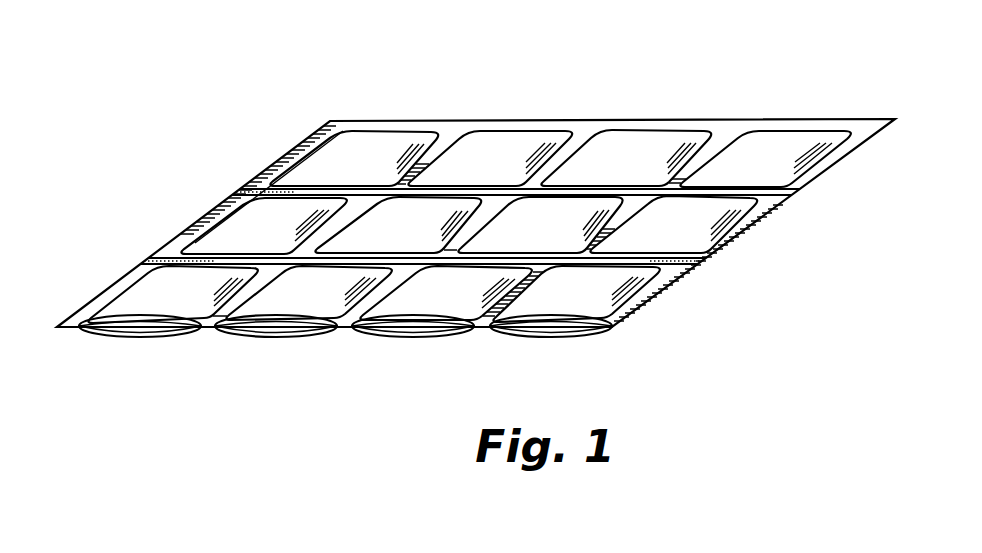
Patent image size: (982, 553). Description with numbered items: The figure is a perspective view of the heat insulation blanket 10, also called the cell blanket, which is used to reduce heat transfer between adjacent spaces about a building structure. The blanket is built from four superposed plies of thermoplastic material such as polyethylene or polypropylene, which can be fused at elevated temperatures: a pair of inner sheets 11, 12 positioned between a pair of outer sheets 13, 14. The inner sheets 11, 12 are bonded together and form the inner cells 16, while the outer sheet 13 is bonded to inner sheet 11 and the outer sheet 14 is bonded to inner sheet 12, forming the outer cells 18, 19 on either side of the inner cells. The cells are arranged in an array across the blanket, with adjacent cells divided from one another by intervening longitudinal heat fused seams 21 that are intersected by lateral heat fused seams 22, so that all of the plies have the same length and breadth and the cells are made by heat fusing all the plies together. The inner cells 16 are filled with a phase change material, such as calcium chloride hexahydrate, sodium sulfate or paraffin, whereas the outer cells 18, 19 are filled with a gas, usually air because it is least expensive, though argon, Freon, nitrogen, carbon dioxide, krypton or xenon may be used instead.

The heat insulation blanket 10 is at (248, 103).
The inner sheet 11 is at (117, 335).
The inner sheet 12 is at (138, 323).
The outer sheet 13 is at (150, 333).
The outer sheet 14 is at (173, 305).
The inner cell 16 is at (273, 329).
The outer cell 18 is at (285, 333).
The outer cell 19 is at (292, 322).
The longitudinal heat fused seam 21 is at (703, 158).
The lateral heat fused seam 22 is at (235, 262).